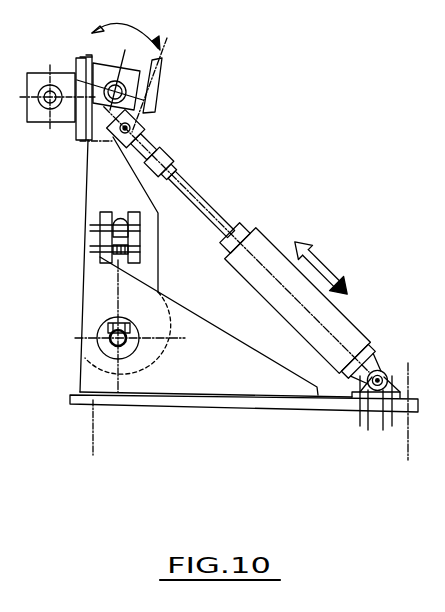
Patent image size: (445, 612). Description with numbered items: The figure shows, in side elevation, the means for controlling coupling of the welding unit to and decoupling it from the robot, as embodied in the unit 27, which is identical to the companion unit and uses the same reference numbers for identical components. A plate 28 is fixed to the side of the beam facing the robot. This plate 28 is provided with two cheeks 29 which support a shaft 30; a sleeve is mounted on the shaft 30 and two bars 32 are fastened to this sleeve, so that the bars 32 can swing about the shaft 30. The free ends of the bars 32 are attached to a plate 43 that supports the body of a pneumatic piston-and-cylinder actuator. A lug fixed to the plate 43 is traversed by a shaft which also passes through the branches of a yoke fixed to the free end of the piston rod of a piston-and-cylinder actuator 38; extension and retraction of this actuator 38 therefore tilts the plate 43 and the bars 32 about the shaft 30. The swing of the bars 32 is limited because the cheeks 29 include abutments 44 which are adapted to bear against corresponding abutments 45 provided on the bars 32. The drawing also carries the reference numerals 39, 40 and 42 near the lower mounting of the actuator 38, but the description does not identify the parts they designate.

The unit 27 is at (82, 208).
The plate 28 is at (272, 410).
The cheeks 29 is at (200, 387).
The shaft 30 is at (97, 345).
The bars 32 is at (135, 193).
The piston-and-cylinder actuator 38 is at (300, 285).
The pivot pin 39 is at (381, 370).
The bearing bracket 40 is at (370, 397).
The fastening bolt 42 is at (397, 398).
The plate 43 is at (88, 62).
The abutments 44 is at (103, 250).
The abutments 45 is at (133, 238).